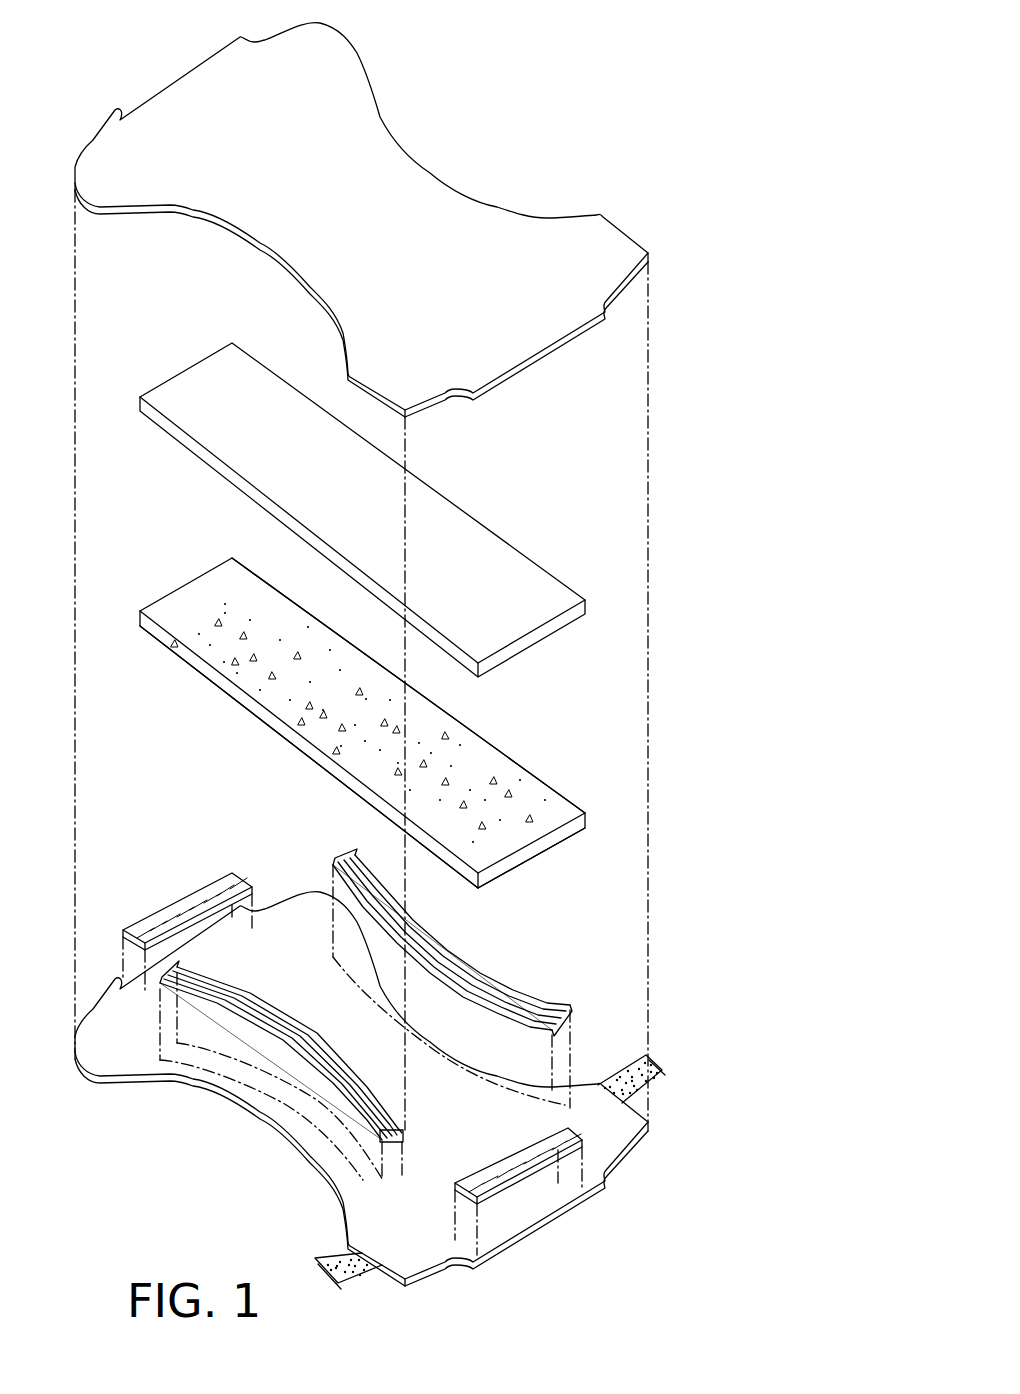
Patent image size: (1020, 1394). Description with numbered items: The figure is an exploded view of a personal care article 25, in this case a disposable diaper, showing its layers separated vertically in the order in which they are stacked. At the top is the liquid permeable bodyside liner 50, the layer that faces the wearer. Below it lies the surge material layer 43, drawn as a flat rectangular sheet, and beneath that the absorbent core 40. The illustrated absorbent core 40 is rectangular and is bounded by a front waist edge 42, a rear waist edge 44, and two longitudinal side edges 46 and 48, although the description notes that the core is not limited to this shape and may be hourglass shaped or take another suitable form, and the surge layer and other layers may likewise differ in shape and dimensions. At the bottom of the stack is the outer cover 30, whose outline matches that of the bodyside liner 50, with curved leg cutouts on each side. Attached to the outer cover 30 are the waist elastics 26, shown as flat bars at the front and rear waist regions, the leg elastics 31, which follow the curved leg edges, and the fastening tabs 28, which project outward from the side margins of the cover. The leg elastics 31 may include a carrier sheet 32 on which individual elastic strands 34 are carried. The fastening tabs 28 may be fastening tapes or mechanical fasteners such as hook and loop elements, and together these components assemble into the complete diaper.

The personal care article 25 is at (595, 127).
The liquid permeable bodyside liner 50 is at (337, 80).
The surge material layer 43 is at (452, 527).
The absorbent core 40 is at (376, 719).
The front waist edge 42 is at (180, 587).
The longitudinal side edge 48 is at (352, 643).
The longitudinal side edge 46 is at (283, 737).
The rear waist edge 44 is at (527, 860).
The outer cover 30 is at (87, 1077).
The leg elastics 31 is at (366, 1004).
The carrier sheet 32 is at (572, 1017).
The elastic strands 34 is at (477, 1010).
The waist elastics 26 is at (178, 900).
The fastening tabs 28 is at (645, 1087).